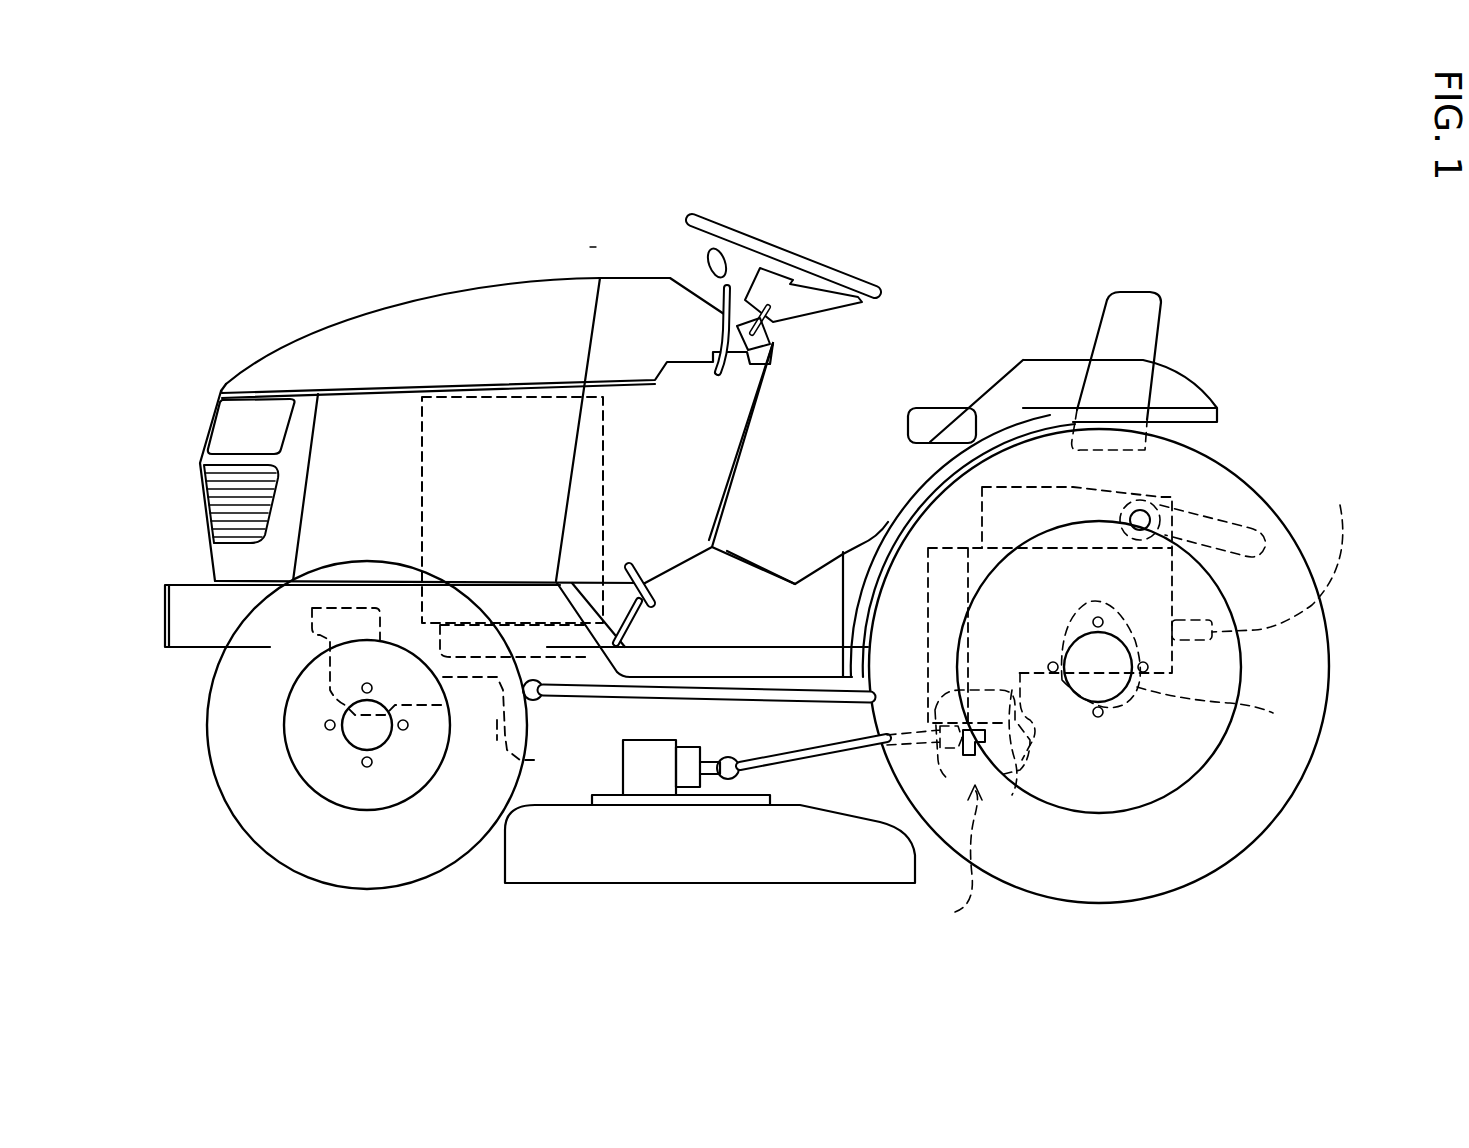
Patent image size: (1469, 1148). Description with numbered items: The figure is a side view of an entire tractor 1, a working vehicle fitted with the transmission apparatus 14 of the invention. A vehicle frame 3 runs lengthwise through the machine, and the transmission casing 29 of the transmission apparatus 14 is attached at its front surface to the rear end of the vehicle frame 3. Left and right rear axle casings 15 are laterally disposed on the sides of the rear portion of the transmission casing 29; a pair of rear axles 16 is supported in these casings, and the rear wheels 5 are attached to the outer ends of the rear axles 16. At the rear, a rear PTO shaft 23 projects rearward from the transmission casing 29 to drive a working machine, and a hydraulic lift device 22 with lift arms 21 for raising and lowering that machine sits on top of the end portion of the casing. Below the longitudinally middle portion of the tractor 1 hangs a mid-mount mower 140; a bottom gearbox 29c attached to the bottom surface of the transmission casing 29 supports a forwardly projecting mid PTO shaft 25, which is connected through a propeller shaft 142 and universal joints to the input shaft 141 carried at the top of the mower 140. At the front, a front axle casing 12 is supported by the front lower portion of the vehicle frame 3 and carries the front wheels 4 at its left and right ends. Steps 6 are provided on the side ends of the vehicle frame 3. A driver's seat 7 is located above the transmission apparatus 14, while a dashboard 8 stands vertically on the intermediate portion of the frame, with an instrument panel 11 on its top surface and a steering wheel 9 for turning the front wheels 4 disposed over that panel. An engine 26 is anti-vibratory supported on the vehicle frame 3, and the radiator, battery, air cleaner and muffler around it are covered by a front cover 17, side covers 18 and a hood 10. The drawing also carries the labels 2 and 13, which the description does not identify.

The tractor 1 is at (593, 245).
The seat 2 is at (728, 535).
The vehicle frame 3 is at (190, 635).
The front wheels 4 is at (250, 840).
The rear wheels 5 is at (1262, 828).
The steps 6 is at (728, 704).
The driver's seat 7 is at (1127, 292).
The dashboard 8 is at (768, 405).
The steering wheel 9 is at (788, 270).
The hood 10 is at (540, 290).
The instrument panel 11 is at (680, 280).
The front axle casing 12 is at (505, 755).
The pedal 13 is at (593, 698).
The transmission apparatus 14 is at (947, 861).
The rear axle casings 15 is at (1273, 713).
The rear axles 16 is at (1110, 688).
The front cover 17 is at (205, 503).
The side covers 18 is at (345, 400).
The lift arms 21 is at (1258, 530).
The hydraulic lift device 22 is at (1178, 468).
The rear PTO shaft 23 is at (1265, 551).
The mid PTO shaft 25 is at (974, 753).
The engine 26 is at (458, 365).
The transmission casing 29 is at (1091, 683).
The bottom gearbox 29c is at (1022, 762).
The mower 140 is at (747, 882).
The input shaft 141 is at (719, 755).
The propeller shaft 142 is at (850, 745).